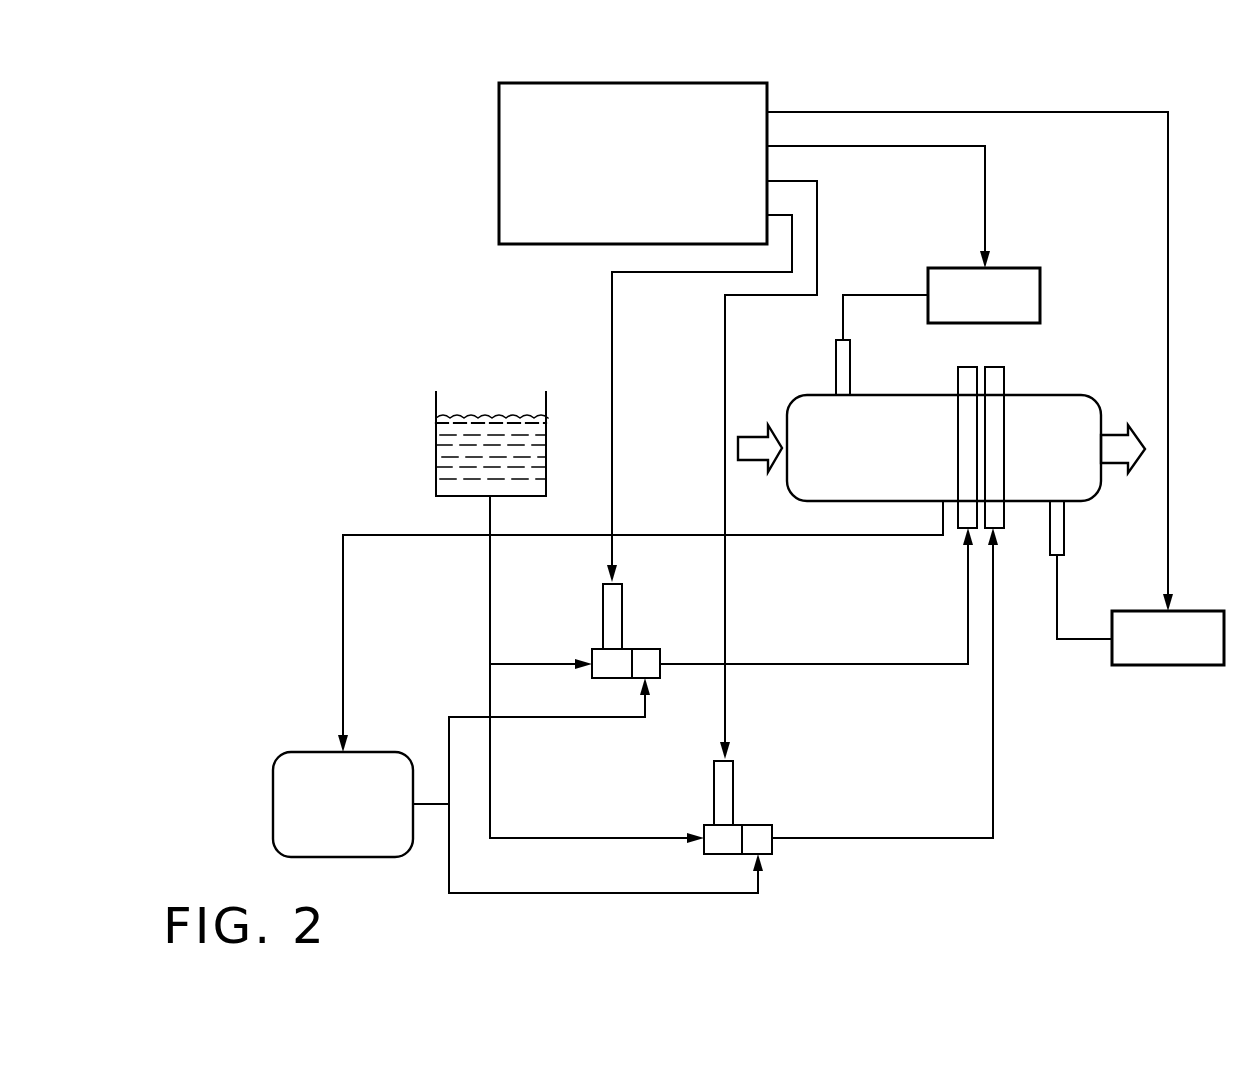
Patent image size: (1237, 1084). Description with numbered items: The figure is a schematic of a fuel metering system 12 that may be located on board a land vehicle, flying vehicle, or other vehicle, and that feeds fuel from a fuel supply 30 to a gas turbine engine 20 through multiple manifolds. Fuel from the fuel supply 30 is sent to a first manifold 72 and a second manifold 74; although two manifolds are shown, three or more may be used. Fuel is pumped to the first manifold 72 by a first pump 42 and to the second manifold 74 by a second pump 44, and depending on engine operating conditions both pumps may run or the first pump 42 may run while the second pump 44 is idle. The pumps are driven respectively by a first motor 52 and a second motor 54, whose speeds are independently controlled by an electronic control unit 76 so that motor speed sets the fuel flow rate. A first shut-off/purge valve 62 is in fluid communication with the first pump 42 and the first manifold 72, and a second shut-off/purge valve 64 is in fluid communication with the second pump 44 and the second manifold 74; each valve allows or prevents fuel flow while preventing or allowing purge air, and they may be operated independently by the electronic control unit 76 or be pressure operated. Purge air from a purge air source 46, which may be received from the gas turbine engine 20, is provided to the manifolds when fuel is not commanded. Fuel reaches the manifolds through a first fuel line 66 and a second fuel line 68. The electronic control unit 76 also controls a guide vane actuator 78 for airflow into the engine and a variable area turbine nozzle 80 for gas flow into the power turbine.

The fuel metering system 12 is at (346, 224).
The gas turbine engine 20 is at (839, 456).
The fuel supply 30 is at (436, 470).
The first pump 42 is at (591, 652).
The second pump 44 is at (704, 828).
The purge air source 46 is at (322, 814).
The first motor 52 is at (622, 604).
The second motor 54 is at (733, 778).
The first shut-off/purge valve 62 is at (643, 650).
The second shut-off/purge valve 64 is at (758, 825).
The first fuel line 66 is at (888, 663).
The second fuel line 68 is at (940, 837).
The first manifold 72 is at (968, 366).
The second manifold 74 is at (1005, 381).
The electronic control unit 76 is at (616, 174).
The guide vane actuator 78 is at (966, 306).
The variable area turbine nozzle 80 is at (1149, 648).